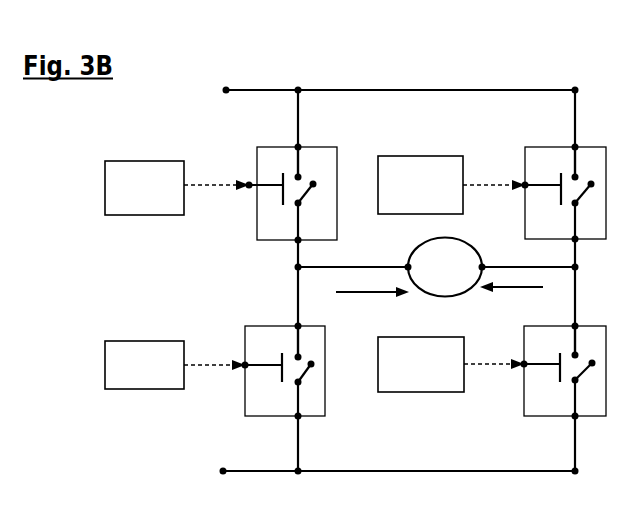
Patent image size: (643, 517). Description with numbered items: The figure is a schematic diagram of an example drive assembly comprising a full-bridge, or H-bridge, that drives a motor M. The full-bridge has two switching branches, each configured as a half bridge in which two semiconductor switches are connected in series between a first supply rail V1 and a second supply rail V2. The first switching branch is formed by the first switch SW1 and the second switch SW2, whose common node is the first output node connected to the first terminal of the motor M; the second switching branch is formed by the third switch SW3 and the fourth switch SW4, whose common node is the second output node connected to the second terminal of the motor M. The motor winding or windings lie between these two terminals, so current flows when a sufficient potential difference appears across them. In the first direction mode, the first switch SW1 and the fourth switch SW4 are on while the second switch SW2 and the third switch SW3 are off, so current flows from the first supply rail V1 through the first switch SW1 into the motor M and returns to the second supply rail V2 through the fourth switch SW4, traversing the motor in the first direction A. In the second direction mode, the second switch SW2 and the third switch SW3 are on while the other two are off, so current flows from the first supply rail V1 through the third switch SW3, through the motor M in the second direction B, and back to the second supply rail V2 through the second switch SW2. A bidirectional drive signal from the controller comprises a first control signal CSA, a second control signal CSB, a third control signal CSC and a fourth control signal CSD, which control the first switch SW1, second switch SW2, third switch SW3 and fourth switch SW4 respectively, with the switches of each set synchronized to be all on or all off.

The first supply rail V1 is at (211, 92).
The second supply rail V2 is at (200, 471).
The first switch SW1 is at (289, 182).
The second switch SW2 is at (281, 387).
The third switch SW3 is at (559, 181).
The fourth switch SW4 is at (562, 391).
The first control signal CSA is at (177, 188).
The second control signal CSB is at (175, 365).
The third control signal CSC is at (451, 185).
The fourth control signal CSD is at (451, 364).
The motor M is at (436, 267).
The first direction A is at (372, 308).
The second direction B is at (511, 302).